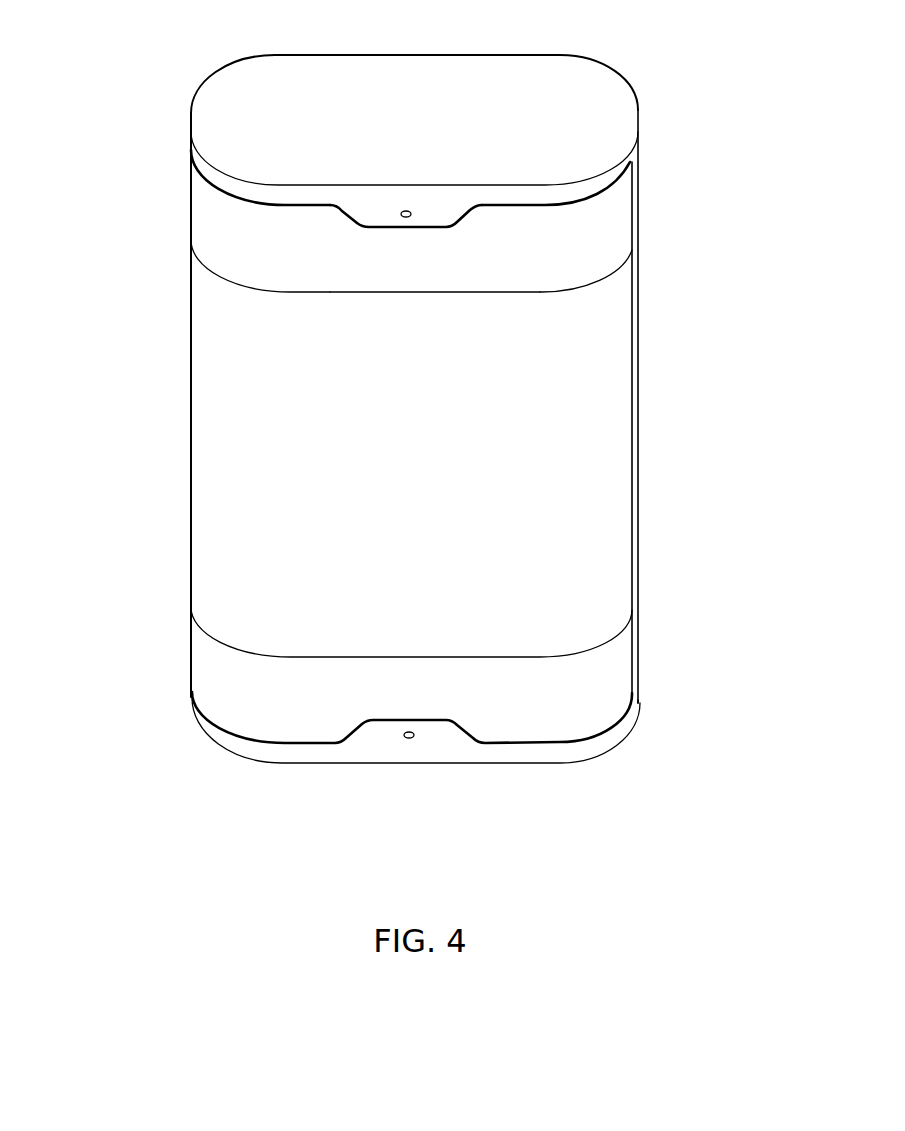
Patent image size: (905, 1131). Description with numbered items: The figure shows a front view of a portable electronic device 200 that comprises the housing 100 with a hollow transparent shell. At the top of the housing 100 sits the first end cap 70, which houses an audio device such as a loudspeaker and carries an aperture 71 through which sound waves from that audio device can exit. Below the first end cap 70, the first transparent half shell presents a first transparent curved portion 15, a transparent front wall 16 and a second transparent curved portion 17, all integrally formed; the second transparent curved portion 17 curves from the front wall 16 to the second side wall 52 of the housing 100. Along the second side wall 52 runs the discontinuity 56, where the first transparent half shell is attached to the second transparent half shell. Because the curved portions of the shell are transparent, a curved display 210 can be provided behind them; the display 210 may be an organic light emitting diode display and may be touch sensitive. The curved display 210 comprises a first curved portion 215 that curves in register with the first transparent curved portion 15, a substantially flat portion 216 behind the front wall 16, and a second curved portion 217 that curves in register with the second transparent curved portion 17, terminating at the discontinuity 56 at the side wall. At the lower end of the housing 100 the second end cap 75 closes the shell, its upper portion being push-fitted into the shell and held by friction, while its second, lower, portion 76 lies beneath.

The first end cap 70 is at (528, 95).
The aperture 71 is at (406, 211).
The discontinuity 56 is at (632, 190).
The first transparent curved portion 15 is at (222, 212).
The front wall 16 is at (384, 244).
The second transparent curved portion 17 is at (597, 213).
The second side wall 52 is at (682, 368).
The first curved portion 215 is at (220, 382).
The substantially flat portion 216 is at (411, 384).
The second curved portion 217 is at (605, 371).
The curved display 210 is at (334, 637).
The second, lower, portion 76 is at (407, 740).
The housing 100 is at (110, 760).
The second end cap 75 is at (219, 825).
The portable electronic device 200 is at (703, 781).